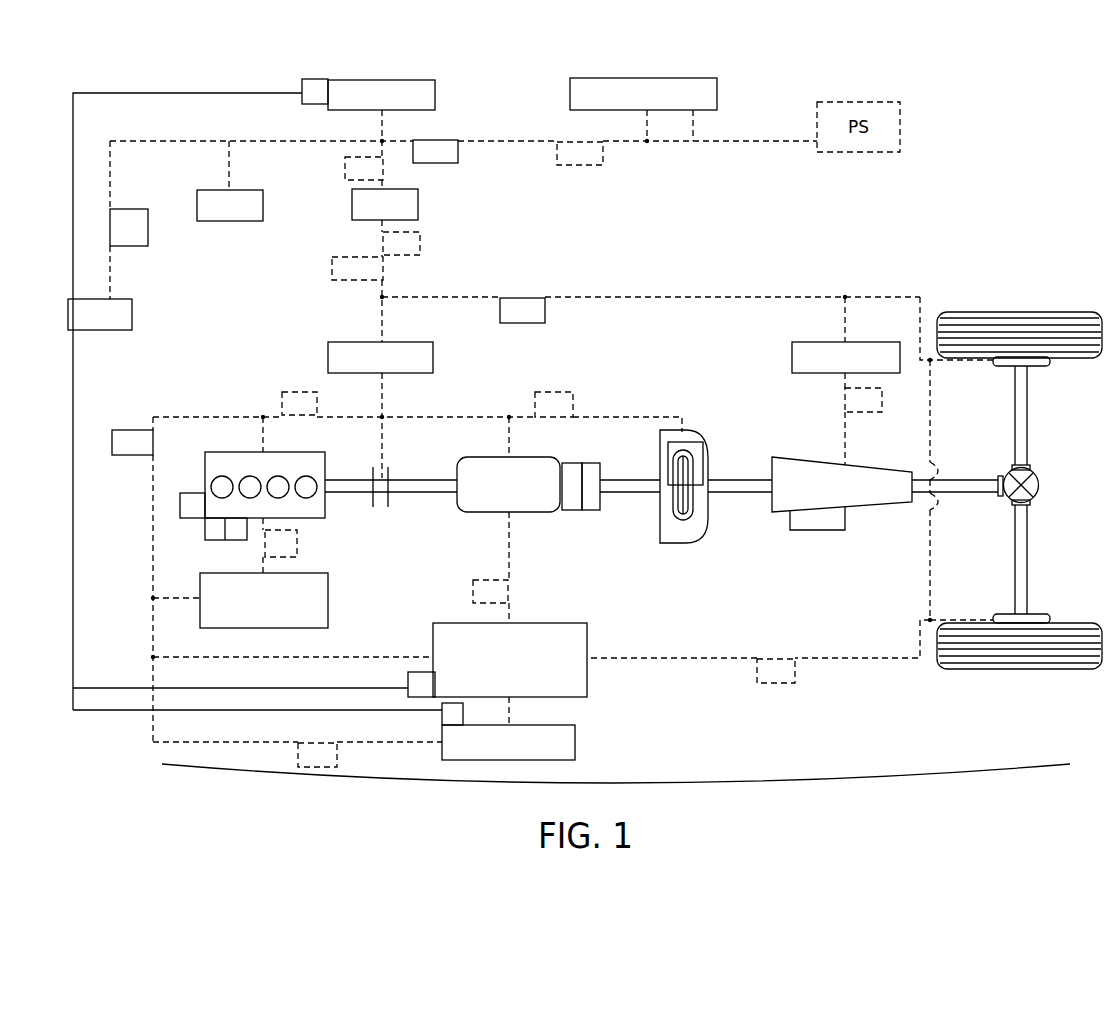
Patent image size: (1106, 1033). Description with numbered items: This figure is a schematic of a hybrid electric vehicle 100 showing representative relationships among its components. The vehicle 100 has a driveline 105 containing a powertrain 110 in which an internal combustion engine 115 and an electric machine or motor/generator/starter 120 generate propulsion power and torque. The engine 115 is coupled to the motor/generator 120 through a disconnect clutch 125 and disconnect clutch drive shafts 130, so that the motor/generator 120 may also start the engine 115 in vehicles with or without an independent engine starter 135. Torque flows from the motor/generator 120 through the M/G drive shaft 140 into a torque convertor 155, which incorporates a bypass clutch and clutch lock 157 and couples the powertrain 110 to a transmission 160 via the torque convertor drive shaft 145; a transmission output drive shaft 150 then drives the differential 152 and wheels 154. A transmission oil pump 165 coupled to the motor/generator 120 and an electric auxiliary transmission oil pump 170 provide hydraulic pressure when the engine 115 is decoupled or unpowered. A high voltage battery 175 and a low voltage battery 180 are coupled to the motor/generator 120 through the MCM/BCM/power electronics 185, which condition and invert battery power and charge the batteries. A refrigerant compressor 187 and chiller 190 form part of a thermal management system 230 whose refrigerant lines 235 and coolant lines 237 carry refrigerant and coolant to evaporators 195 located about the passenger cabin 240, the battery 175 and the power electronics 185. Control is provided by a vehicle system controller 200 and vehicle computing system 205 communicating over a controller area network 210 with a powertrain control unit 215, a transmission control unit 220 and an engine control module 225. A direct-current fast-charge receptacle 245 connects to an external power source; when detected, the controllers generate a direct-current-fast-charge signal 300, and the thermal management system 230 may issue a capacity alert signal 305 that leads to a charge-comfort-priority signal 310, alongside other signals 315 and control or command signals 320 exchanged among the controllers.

The hybrid electric vehicle 100 is at (838, 235).
The driveline 105 is at (700, 780).
The powertrain 110 is at (612, 583).
The internal combustion engine 115 is at (325, 508).
The electric machine or motor/generator/starter 120 is at (523, 512).
The disconnect clutch 125 is at (390, 500).
The disconnect clutch drive shafts 130 is at (355, 478).
The independent engine starter 135 is at (218, 540).
The M/G drive shaft 140 is at (635, 478).
The torque convertor drive shaft 145 is at (752, 476).
The transmission output drive shaft 150 is at (970, 494).
The differential 152 is at (1040, 482).
The wheels 154 is at (1058, 366).
The torque convertor 155 is at (705, 528).
The bypass clutch and clutch lock 157 is at (703, 468).
The transmission 160 is at (890, 503).
The transmission oil pump 165 is at (567, 512).
The electric auxiliary transmission oil pump 170 is at (815, 532).
The high voltage battery 175 is at (575, 745).
The low voltage battery 180 is at (240, 540).
The MCM/BCM/power electronics 185 is at (587, 672).
The refrigerant compressor 187 is at (180, 518).
The chiller 190 is at (595, 512).
The evaporators 195 is at (300, 92).
The vehicle system controller 200 is at (418, 205).
The vehicle computing system 205 is at (228, 221).
The controller area network 210 is at (458, 150).
The powertrain control unit/module 215 is at (433, 358).
The transmission control unit 220 is at (822, 373).
The engine control module / engine control unit / energy management system 225 is at (328, 620).
The thermal management system 230 is at (132, 320).
The refrigerant lines 235 is at (73, 133).
The coolant lines 237 is at (73, 660).
The passenger cabin 240 is at (435, 100).
The direct-current fast-charge receptacle 245 is at (717, 100).
The direct-current-fast-charge signal 300 is at (603, 153).
The capacity alert signal 305 is at (130, 209).
The charge-comfort-priority signal 310 is at (332, 270).
The other signals 315 is at (282, 400).
The control or command signals 320 is at (345, 168).